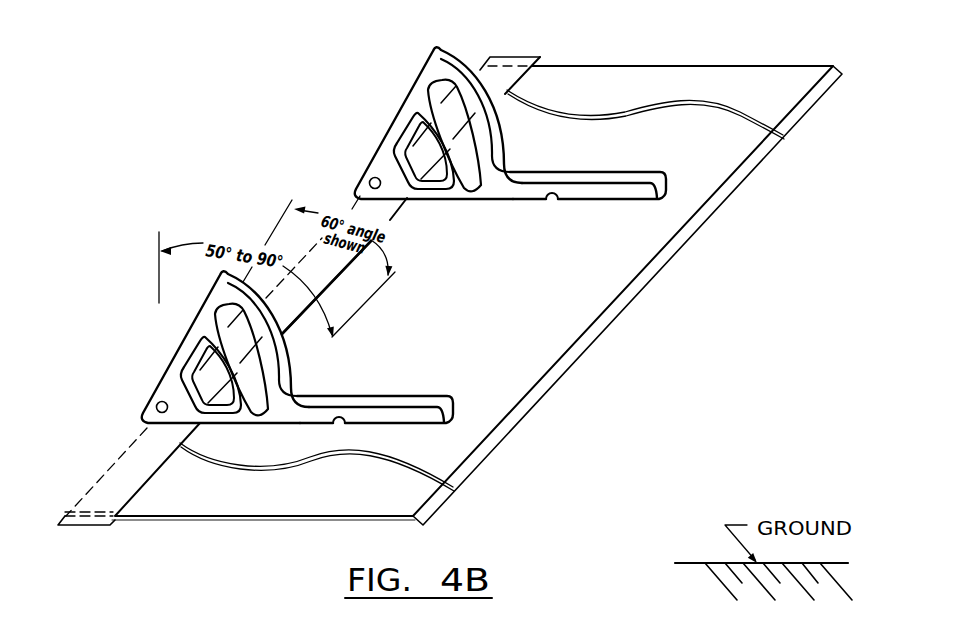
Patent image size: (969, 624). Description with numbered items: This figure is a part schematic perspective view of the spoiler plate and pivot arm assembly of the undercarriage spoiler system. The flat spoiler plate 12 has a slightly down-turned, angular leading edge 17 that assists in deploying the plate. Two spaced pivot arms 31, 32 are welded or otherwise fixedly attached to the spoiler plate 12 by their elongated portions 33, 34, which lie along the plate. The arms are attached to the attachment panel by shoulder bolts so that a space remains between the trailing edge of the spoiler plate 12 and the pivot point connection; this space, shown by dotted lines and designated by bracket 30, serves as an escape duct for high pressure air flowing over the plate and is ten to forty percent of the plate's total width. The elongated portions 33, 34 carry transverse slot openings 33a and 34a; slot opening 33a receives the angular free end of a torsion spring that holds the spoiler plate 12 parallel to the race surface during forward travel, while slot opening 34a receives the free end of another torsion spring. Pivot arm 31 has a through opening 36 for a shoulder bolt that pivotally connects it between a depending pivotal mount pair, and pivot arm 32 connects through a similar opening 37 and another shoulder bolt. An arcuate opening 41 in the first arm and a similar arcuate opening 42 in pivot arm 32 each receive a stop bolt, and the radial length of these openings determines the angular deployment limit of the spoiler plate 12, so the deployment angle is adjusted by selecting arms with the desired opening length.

The spoiler plate 12 is at (548, 316).
The angular leading edge 17 is at (532, 397).
The escape duct spacing 30 is at (517, 56).
The pivot arm 31 is at (205, 303).
The pivot arm 32 is at (489, 162).
The elongated portion 33 is at (378, 396).
The elongated portion 34 is at (594, 156).
The transverse slot opening 33a is at (343, 425).
The transverse slot opening 34a is at (537, 233).
The through opening 36 is at (157, 402).
The opening 37 is at (341, 159).
The arcuate opening 41 is at (258, 413).
The arcuate opening 42 is at (443, 178).